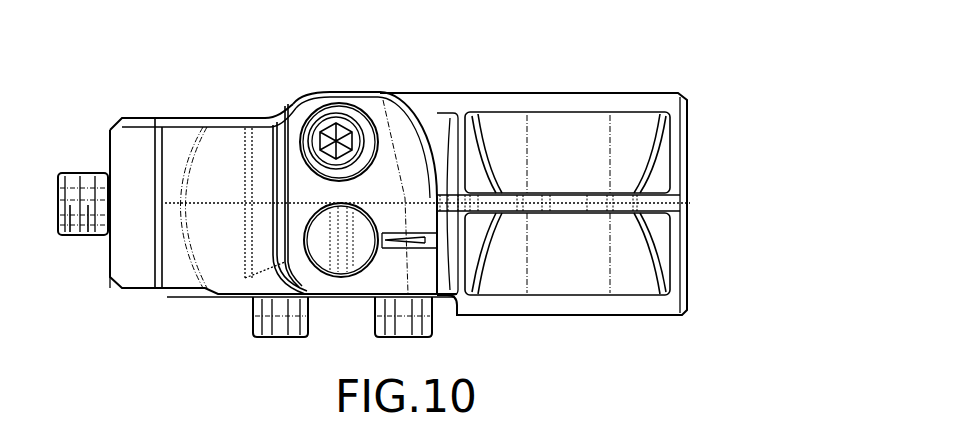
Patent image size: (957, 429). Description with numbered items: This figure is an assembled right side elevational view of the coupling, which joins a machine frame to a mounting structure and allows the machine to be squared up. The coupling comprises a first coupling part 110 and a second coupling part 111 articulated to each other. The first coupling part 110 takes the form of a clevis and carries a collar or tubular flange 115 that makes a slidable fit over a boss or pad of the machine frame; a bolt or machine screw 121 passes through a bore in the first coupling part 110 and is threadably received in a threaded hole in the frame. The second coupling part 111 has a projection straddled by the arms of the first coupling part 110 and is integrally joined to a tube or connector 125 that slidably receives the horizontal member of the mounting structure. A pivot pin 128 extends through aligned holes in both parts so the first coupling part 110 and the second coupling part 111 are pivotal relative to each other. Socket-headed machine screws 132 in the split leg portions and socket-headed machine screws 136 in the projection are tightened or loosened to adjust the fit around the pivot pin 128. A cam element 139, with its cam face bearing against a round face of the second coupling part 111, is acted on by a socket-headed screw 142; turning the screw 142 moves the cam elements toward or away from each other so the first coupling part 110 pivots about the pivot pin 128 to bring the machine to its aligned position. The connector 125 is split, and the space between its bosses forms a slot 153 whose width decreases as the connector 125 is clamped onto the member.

The first coupling part 110 is at (163, 298).
The second coupling part 111 is at (597, 318).
The collar or tubular flange 115 is at (144, 137).
The bolt or machine screw 121 is at (77, 237).
The tube or connector 125 is at (623, 93).
The pivot pin 128 is at (338, 257).
The socket-headed machine screws 132 is at (417, 315).
The socket-headed machine screws 136 is at (278, 337).
The cam element 139 is at (364, 118).
The socket-headed screw 142 is at (337, 128).
The slot 153 is at (663, 203).